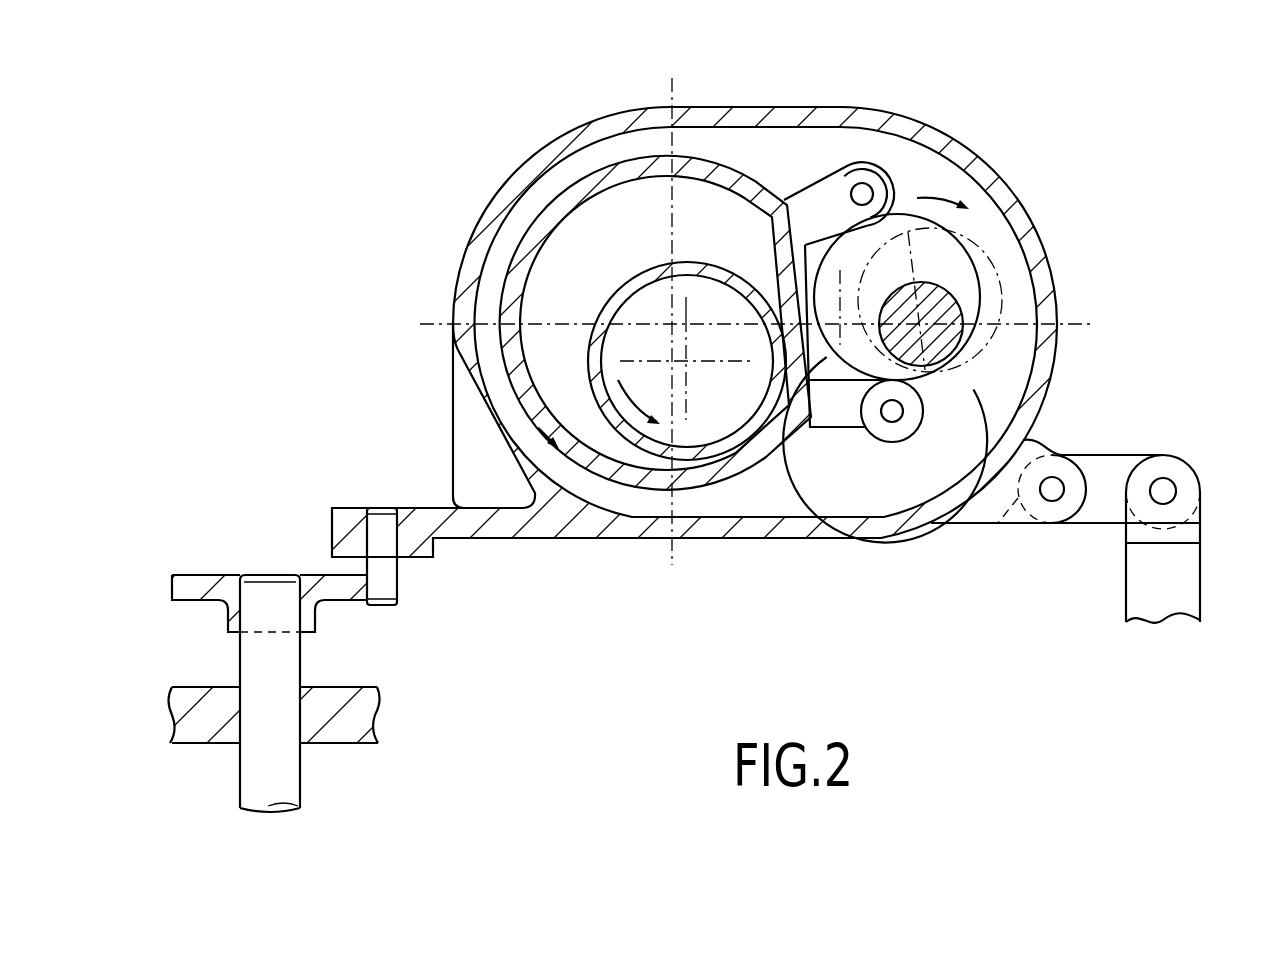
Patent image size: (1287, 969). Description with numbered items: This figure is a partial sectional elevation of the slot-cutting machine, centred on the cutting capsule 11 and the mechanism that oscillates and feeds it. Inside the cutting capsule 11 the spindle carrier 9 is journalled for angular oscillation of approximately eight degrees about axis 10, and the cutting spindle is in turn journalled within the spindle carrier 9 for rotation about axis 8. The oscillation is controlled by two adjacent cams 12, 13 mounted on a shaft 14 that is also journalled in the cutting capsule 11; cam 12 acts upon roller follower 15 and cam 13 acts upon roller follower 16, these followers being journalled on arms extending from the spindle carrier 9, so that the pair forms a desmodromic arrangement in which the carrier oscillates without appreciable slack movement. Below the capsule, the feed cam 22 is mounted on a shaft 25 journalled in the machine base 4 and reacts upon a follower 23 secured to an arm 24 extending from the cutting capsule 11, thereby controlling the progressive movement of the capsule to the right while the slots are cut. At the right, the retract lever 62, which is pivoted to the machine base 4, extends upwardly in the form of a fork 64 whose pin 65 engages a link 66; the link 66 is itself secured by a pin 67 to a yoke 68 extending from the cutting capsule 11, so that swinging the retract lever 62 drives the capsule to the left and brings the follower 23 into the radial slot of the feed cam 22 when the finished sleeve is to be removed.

The machine base 4 is at (180, 710).
The axis 8 is at (672, 365).
The spindle carrier 9 is at (530, 247).
The axis 10 is at (670, 322).
The cutting capsule 11 is at (740, 111).
The cam 12 is at (975, 238).
The cam 13 is at (1000, 283).
The shaft 14 is at (932, 338).
The roller follower 15 is at (873, 423).
The roller follower 16 is at (868, 163).
The feed cam 22 is at (180, 592).
The follower 23 is at (383, 588).
The arm 24 is at (340, 518).
The shaft 25 is at (253, 787).
The retract lever 62 is at (1166, 607).
The fork 64 is at (1198, 516).
The pin 65 is at (1165, 490).
The link 66 is at (1097, 515).
The pin 67 is at (1045, 497).
The yoke 68 is at (967, 517).